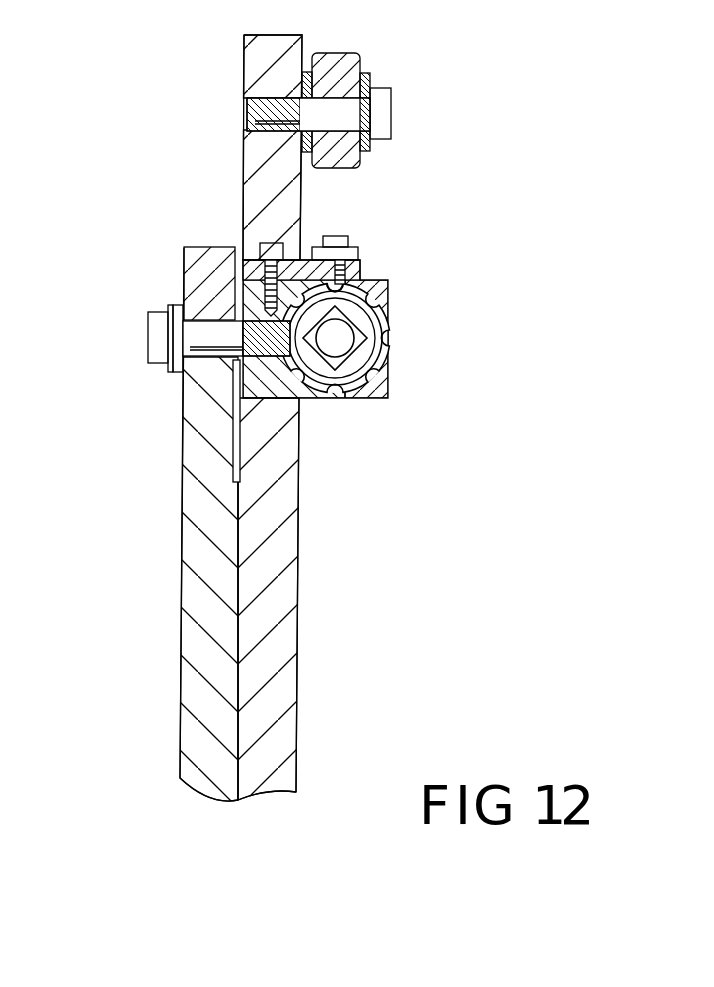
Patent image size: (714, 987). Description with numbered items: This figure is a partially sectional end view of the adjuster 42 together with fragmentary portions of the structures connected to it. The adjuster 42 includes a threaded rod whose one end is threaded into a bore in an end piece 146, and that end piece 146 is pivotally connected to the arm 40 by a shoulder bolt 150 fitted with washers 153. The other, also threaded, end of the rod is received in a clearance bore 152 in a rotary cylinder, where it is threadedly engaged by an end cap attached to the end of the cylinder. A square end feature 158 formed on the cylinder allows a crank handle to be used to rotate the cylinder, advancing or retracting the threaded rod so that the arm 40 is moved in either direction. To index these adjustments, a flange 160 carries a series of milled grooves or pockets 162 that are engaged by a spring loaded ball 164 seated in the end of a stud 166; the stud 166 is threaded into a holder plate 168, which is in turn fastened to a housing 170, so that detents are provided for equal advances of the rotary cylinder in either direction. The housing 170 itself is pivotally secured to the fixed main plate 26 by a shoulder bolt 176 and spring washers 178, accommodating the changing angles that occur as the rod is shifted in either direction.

The fixed main plate 26 is at (178, 593).
The arm 40 is at (302, 593).
The adjuster 42 is at (373, 33).
The end piece 146 is at (355, 52).
The shoulder bolt 150 is at (391, 125).
The clearance bore 152 is at (302, 64).
The washers 153 is at (370, 153).
The square end feature 158 is at (349, 354).
The flange 160 is at (402, 343).
The milled grooves or pockets 162 is at (389, 318).
The spring loaded ball 164 is at (347, 284).
The stud 166 is at (354, 240).
The holder plate 168 is at (259, 258).
The housing 170 is at (280, 399).
The shoulder bolt 176 is at (213, 317).
The spring washers 178 is at (183, 305).